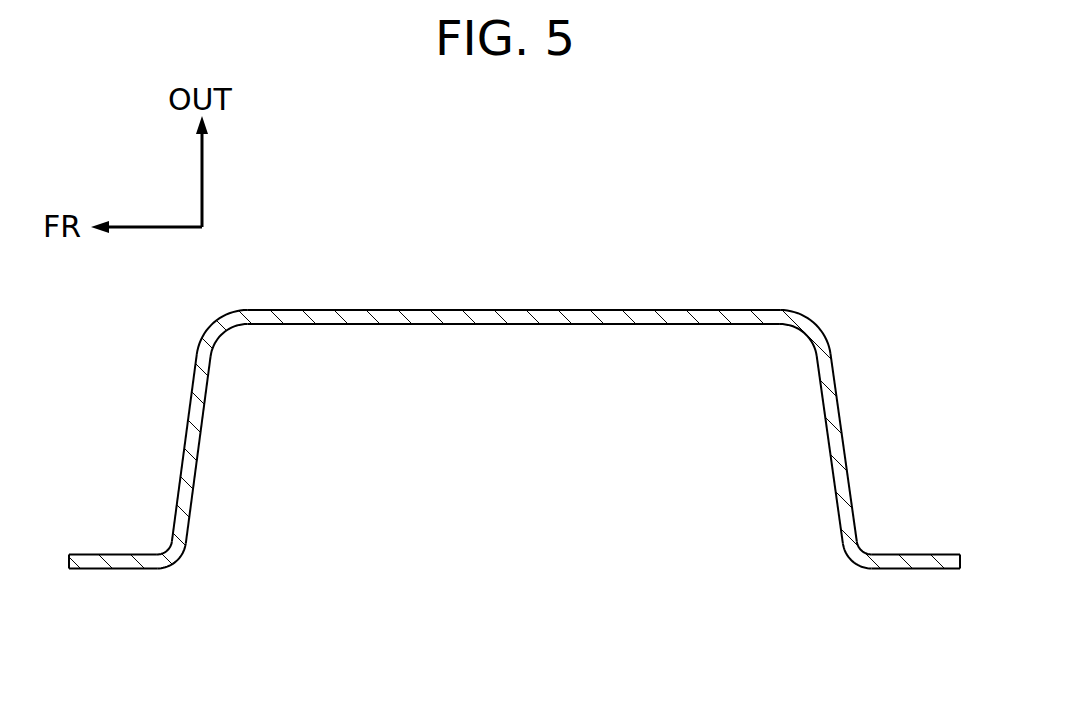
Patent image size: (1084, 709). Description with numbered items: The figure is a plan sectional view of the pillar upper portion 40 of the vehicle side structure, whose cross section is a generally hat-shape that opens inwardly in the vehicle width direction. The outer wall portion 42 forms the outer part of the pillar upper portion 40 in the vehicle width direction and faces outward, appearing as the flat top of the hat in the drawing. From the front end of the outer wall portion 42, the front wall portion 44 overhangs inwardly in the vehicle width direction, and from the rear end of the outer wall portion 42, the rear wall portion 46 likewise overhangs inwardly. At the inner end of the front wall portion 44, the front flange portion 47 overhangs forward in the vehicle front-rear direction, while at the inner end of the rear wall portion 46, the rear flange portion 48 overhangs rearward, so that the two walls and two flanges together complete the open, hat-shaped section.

The pillar upper portion 40 is at (745, 249).
The outer wall portion 42 is at (558, 316).
The front wall portion 44 is at (193, 434).
The rear wall portion 46 is at (839, 432).
The front flange portion 47 is at (92, 557).
The rear flange portion 48 is at (941, 557).